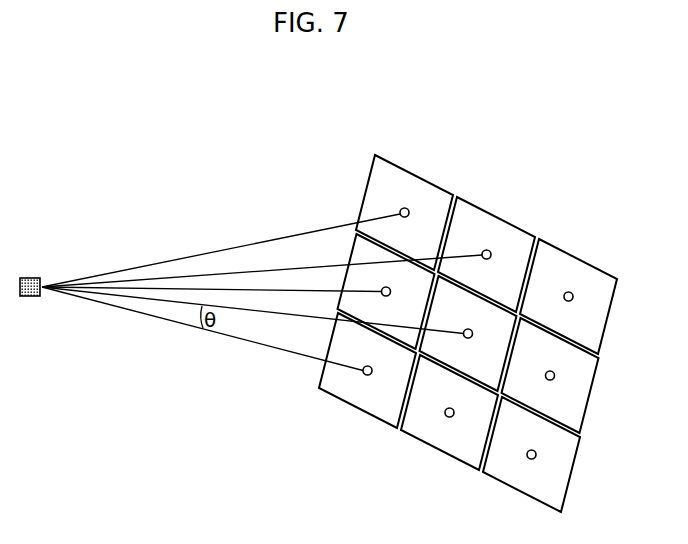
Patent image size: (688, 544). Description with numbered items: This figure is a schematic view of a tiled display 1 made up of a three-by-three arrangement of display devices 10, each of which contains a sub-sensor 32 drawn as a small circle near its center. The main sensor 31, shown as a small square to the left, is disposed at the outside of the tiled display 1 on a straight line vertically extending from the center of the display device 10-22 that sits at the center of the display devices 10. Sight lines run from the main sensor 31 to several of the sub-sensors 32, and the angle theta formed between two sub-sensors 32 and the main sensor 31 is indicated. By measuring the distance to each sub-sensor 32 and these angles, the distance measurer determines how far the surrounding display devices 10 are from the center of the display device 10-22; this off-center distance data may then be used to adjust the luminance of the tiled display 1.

The tiled display 1 is at (521, 178).
The display device 10 is at (580, 259).
The display device disposed at a center 10-22 is at (474, 323).
The main sensor 31 is at (27, 277).
The sub-sensor 32 is at (405, 208).